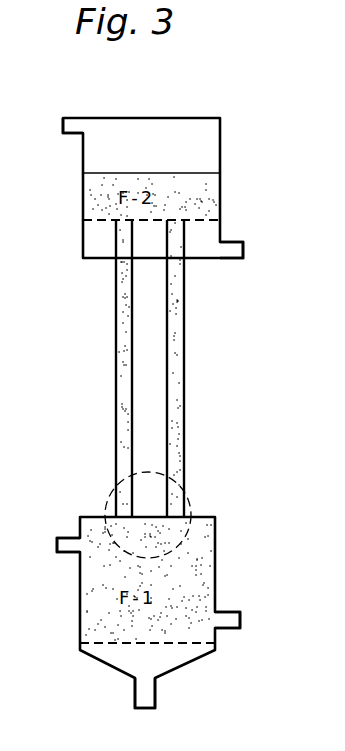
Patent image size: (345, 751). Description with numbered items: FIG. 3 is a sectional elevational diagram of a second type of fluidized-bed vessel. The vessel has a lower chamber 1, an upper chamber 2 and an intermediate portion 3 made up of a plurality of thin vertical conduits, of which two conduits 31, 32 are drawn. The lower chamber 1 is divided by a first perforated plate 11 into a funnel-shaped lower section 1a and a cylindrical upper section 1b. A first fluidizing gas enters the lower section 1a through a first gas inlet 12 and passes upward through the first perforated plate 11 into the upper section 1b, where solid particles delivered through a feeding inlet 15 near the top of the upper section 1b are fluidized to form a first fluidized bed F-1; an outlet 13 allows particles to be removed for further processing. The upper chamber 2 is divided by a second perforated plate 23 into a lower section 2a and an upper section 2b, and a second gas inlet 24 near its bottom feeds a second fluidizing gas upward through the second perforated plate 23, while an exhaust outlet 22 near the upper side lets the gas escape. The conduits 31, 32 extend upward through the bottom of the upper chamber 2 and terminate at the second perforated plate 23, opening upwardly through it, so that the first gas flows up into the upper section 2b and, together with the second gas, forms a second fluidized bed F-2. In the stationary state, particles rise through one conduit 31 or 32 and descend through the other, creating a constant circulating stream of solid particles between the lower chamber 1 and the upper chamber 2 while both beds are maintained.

The lower chamber 1 is at (217, 568).
The lower section 1a is at (115, 665).
The upper section 1b is at (97, 614).
The first perforated plate 11 is at (195, 645).
The first gas inlet 12 is at (156, 690).
The outlet 13 is at (237, 629).
The feeding inlet 15 is at (66, 539).
The upper chamber 2 is at (222, 186).
The lower section of upper chamber 2a is at (94, 246).
The upper section of upper chamber 2b is at (98, 157).
The exhaust outlet 22 is at (66, 118).
The second perforated plate 23 is at (101, 221).
The second gas inlet 24 is at (237, 259).
The intermediate portion 3 is at (149, 389).
The vertical conduit 31 is at (122, 392).
The vertical conduit 32 is at (178, 387).